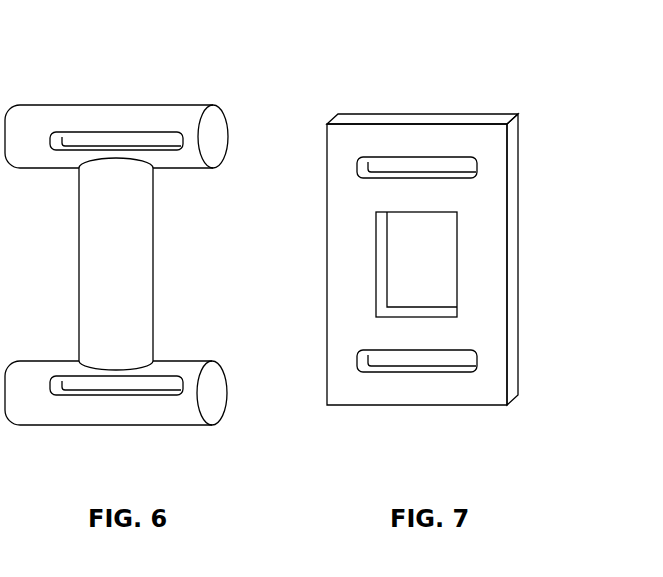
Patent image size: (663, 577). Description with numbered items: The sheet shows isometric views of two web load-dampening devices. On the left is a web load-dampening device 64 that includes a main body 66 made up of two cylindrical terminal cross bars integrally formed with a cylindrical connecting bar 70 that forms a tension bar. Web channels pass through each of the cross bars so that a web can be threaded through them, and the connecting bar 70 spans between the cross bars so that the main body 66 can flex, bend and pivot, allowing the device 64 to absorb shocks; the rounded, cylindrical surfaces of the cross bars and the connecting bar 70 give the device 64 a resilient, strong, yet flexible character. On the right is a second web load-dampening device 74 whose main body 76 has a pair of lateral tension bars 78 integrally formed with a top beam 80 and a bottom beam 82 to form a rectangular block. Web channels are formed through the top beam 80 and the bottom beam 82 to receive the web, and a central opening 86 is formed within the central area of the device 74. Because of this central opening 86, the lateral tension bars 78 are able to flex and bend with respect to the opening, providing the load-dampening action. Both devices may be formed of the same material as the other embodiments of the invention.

In FIG. 6, the web load-dampening device 64 is at (91, 86).
In FIG. 6, the main body 66 is at (153, 241).
In FIG. 6, the cylindrical connecting bar 70 is at (153, 279).
In FIG. 7, the web load-dampening device 74 is at (421, 86).
In FIG. 7, the main body 76 is at (507, 163).
In FIG. 7, the lateral tension bars 78 is at (507, 262).
In FIG. 7, the top beam 80 is at (478, 122).
In FIG. 7, the bottom beam 82 is at (344, 406).
In FIG. 7, the central opening 86 is at (408, 302).